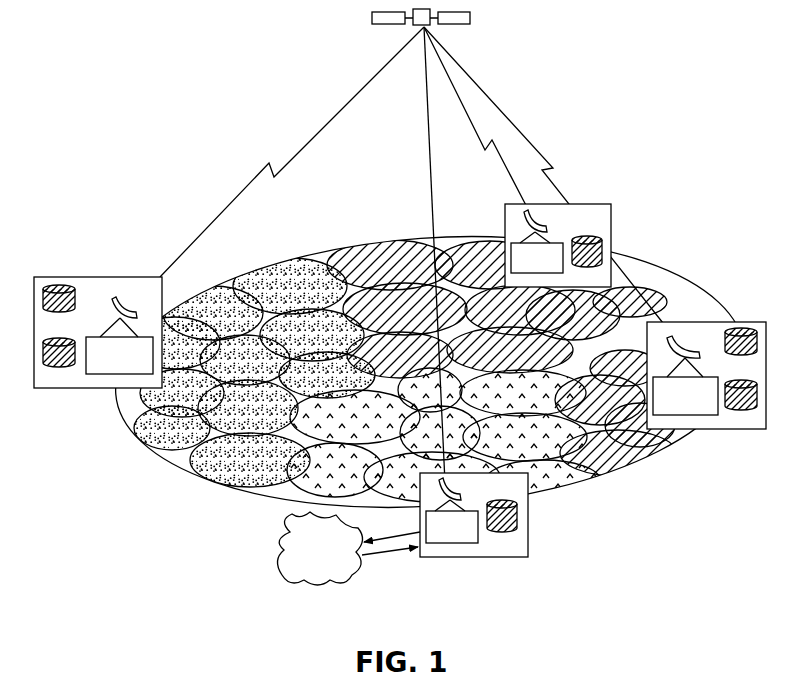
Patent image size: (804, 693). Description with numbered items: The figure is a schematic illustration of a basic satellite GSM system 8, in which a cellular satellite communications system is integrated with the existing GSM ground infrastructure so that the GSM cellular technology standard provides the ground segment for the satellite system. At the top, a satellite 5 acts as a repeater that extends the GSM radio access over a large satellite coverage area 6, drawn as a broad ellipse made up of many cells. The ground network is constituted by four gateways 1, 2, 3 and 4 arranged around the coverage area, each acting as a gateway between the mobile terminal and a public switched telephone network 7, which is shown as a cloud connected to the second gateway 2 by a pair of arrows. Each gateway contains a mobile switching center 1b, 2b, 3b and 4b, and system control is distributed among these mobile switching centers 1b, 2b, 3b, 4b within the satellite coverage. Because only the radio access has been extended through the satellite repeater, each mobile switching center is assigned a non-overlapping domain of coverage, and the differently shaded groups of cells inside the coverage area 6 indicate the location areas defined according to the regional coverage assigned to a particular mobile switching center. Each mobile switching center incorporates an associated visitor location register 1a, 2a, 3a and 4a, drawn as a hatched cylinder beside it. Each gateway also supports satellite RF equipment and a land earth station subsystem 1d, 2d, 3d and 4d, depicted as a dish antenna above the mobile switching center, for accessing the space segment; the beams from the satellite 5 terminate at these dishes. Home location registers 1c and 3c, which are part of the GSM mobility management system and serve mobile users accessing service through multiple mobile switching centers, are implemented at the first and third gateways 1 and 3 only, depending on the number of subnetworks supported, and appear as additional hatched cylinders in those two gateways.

The gateway 1 is at (98, 345).
The visitor location register 1a is at (55, 368).
The mobile switching center 1b is at (110, 374).
The home location register 1c is at (77, 292).
The land earth station subsystem 1d is at (107, 320).
The gateway 2 is at (469, 533).
The visitor location register 2a is at (518, 523).
The mobile switching center 2b is at (457, 543).
The land earth station subsystem 2d is at (427, 507).
The gateway 3 is at (715, 395).
The visitor location register 3a is at (743, 410).
The mobile switching center 3b is at (695, 415).
The home location register 3c is at (730, 328).
The land earth station subsystem 3d is at (706, 330).
The gateway 4 is at (566, 224).
The visitor location register 4a is at (603, 267).
The mobile switching center 4b is at (514, 243).
The land earth station subsystem 4d is at (547, 222).
The satellite 5 is at (471, 17).
The satellite coverage area 6 is at (188, 460).
The public switched telephone network 7 is at (348, 580).
The basic satellite GSM system 8 is at (184, 152).